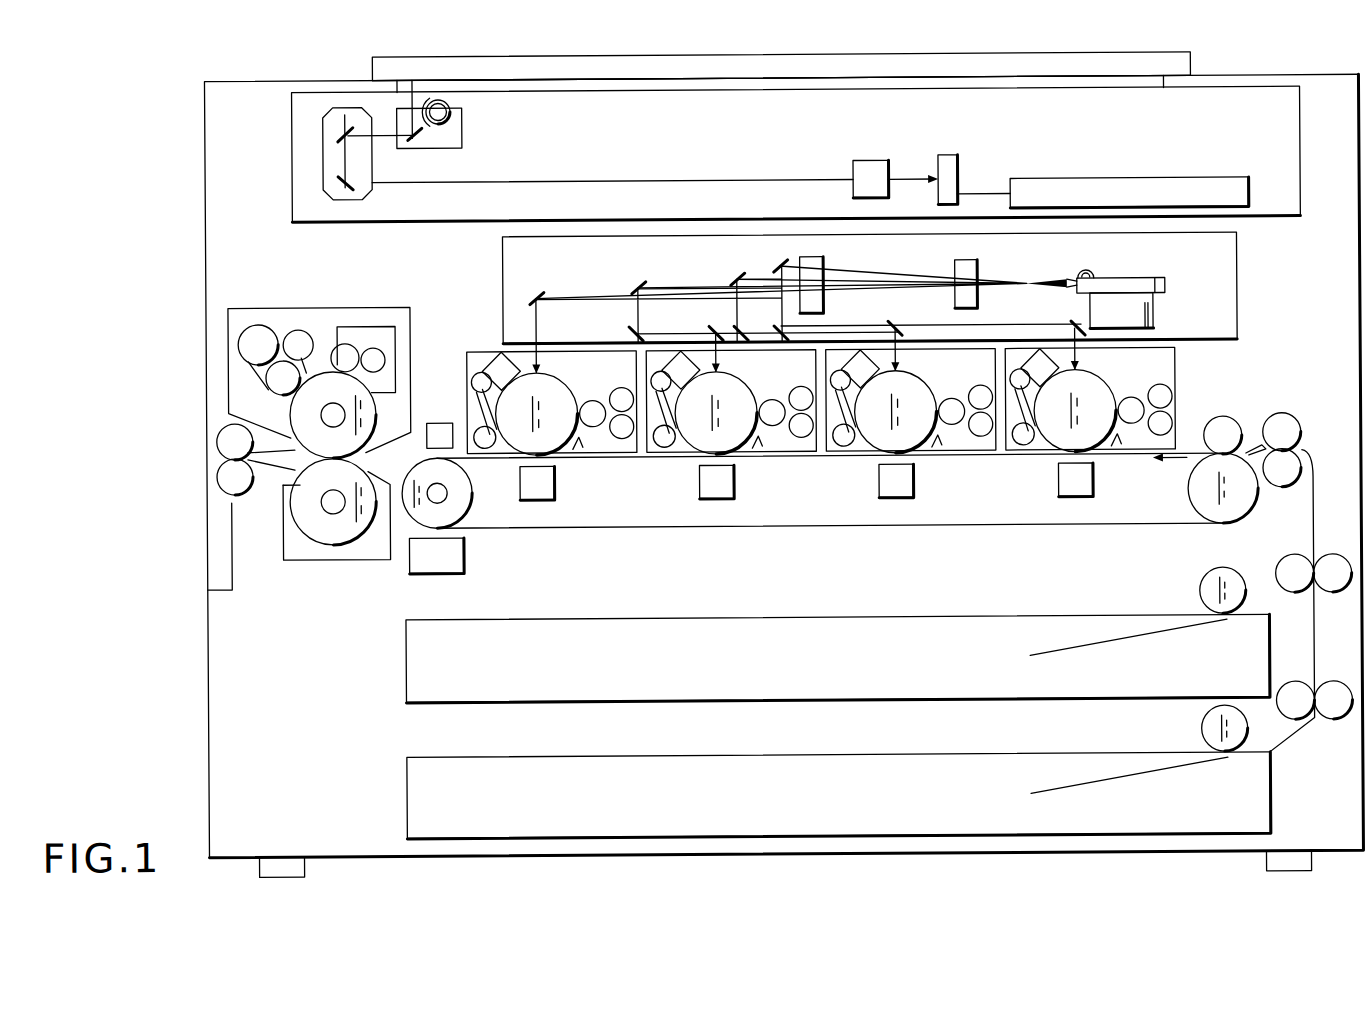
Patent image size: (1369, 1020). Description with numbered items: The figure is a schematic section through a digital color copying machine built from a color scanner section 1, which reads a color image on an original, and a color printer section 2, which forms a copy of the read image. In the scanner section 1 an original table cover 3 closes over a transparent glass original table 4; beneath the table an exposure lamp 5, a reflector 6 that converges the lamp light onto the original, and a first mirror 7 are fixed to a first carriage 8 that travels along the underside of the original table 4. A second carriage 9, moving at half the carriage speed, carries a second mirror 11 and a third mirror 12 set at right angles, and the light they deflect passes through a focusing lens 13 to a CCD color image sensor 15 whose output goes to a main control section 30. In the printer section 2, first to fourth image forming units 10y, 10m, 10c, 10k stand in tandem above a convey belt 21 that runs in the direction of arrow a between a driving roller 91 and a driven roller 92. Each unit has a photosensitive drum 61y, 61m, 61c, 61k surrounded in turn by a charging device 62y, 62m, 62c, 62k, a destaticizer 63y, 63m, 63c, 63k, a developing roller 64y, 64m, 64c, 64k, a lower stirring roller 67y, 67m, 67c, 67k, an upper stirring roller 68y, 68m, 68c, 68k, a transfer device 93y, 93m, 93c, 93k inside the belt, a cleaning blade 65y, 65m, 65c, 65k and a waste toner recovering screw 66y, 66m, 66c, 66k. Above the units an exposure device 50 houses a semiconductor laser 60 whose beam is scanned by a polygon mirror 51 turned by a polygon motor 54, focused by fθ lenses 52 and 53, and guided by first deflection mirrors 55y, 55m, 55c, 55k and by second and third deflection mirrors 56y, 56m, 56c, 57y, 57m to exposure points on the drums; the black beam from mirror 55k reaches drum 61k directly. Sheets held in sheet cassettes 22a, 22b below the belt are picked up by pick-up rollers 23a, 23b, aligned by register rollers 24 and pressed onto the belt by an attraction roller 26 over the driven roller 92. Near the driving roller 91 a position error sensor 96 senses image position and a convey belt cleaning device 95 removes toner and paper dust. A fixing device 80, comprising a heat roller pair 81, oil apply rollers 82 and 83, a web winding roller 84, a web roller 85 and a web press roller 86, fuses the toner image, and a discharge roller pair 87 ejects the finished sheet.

The color scanner section 1 is at (681, 106).
The color printer section 2 is at (500, 251).
The original table cover 3 is at (599, 54).
The original table 4 is at (639, 78).
The exposure lamp 5 is at (453, 106).
The reflector 6 is at (455, 120).
The first mirror 7 is at (420, 140).
The first carriage 8 is at (464, 148).
The second carriage 9 is at (372, 195).
The image forming unit 10k is at (552, 428).
The image forming unit 10c is at (731, 427).
The image forming unit 10m is at (911, 426).
The image forming unit 10y is at (1090, 424).
The second mirror 11 is at (338, 133).
The third mirror 12 is at (338, 181).
The focusing lens 13 is at (862, 161).
The CCD color image sensor 15 is at (948, 156).
The convey belt 21 is at (1185, 455).
The sheet cassette 22a is at (405, 662).
The sheet cassette 22b is at (405, 799).
The pick-up roller 23a is at (1199, 594).
The pick-up roller 23b is at (1200, 732).
The register rollers 24 is at (1280, 416).
The attraction roller 26 is at (1223, 419).
The main control section 30 is at (1118, 180).
The exposure device 50 is at (1240, 262).
The polygon mirror 51 is at (1168, 286).
The fθ lens 52 is at (980, 268).
The fθ lens 53 is at (826, 265).
The polygon motor 54 is at (1155, 316).
The first deflection mirror 55k is at (537, 292).
The first deflection mirror 55c is at (637, 282).
The first deflection mirror 55m is at (736, 275).
The first deflection mirror 55y is at (778, 266).
The second deflection mirror 56c is at (632, 326).
The second deflection mirror 56m is at (737, 325).
The second deflection mirror 56y is at (780, 331).
The third deflection mirror 57m is at (893, 320).
The third deflection mirror 57y is at (1075, 320).
The semiconductor laser 60 is at (1092, 270).
The photosensitive drum 61k is at (547, 403).
The photosensitive drum 61c is at (726, 402).
The photosensitive drum 61m is at (908, 401).
The photosensitive drum 61y is at (1086, 400).
The charging device 62k is at (487, 349).
The charging device 62c is at (682, 345).
The charging device 62m is at (902, 347).
The charging device 62y is at (1045, 343).
The destaticizer 63k is at (458, 374).
The destaticizer 63c is at (621, 351).
The destaticizer 63m is at (862, 343).
The destaticizer 63y is at (1007, 344).
The developing roller 64k is at (612, 482).
The developing roller 64c is at (789, 480).
The developing roller 64m is at (974, 479).
The developing roller 64y is at (1150, 478).
The cleaning blade 65k is at (460, 407).
The cleaning blade 65c is at (661, 458).
The cleaning blade 65m is at (845, 457).
The cleaning blade 65y is at (1030, 456).
The waste toner recovering screw 66k is at (498, 465).
The waste toner recovering screw 66c is at (677, 464).
The waste toner recovering screw 66m is at (861, 463).
The waste toner recovering screw 66y is at (1036, 462).
The lower stirring roller 67k is at (615, 448).
The lower stirring roller 67c is at (795, 447).
The lower stirring roller 67m is at (979, 446).
The lower stirring roller 67y is at (1131, 410).
The upper stirring roller 68k is at (618, 395).
The upper stirring roller 68c is at (795, 394).
The upper stirring roller 68m is at (980, 393).
The upper stirring roller 68y is at (1185, 401).
The fixing device 80 is at (418, 325).
The heat roller pair 81 is at (334, 557).
The oil apply roller 82 is at (374, 345).
The oil apply roller 83 is at (346, 341).
The web winding roller 84 is at (299, 327).
The web roller 85 is at (258, 322).
The web press roller 86 is at (272, 385).
The discharge roller pair 87 is at (232, 492).
The driving roller 91 is at (470, 500).
The driven roller 92 is at (1236, 526).
The transfer device 93k is at (563, 498).
The transfer device 93c is at (744, 497).
The transfer device 93m is at (928, 496).
The transfer device 93y is at (1104, 495).
The convey belt cleaning device 95 is at (464, 553).
The position error sensor 96 is at (425, 445).
The conveyance direction arrow a is at (1170, 469).